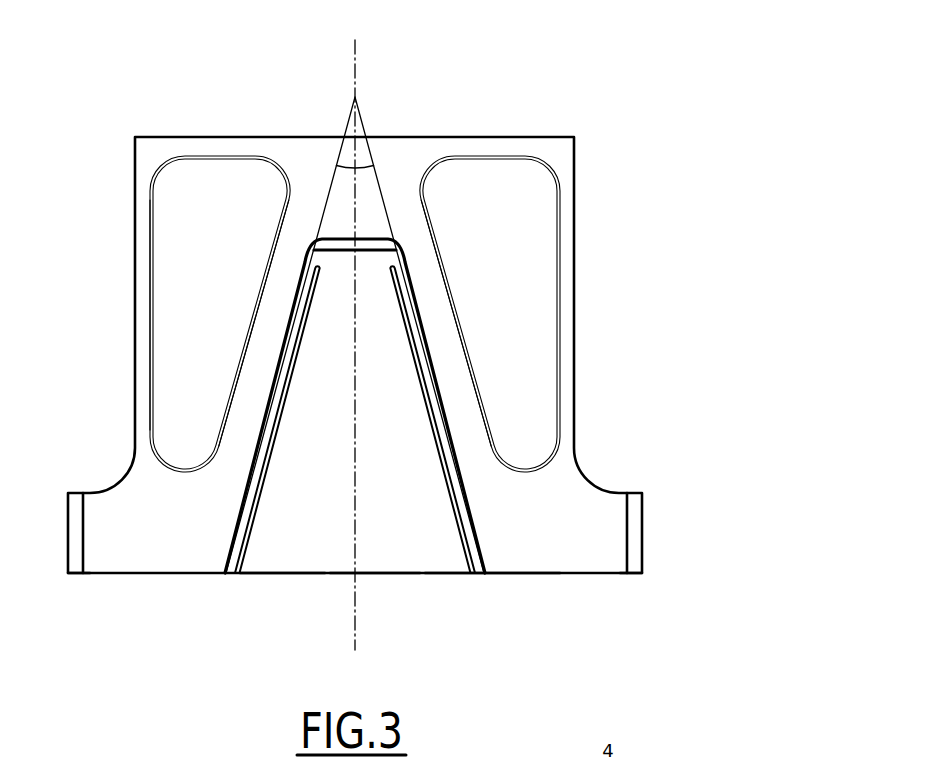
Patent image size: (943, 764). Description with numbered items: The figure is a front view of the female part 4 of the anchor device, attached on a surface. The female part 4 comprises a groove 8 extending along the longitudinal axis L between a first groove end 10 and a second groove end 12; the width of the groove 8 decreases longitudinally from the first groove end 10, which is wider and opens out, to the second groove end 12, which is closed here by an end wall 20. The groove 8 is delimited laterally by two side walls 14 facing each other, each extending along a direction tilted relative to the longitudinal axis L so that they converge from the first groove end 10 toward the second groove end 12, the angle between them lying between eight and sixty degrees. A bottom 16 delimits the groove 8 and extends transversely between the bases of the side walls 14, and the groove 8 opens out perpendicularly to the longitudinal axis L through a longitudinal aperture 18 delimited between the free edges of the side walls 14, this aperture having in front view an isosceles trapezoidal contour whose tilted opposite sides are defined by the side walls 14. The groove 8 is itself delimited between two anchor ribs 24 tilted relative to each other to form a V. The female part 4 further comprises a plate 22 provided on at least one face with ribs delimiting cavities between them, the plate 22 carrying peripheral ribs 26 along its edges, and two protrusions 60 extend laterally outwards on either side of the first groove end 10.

The female part 4 is at (614, 110).
The groove 8 is at (278, 565).
The first groove end 10 is at (440, 576).
The second groove end 12 is at (332, 271).
The side walls 14 is at (292, 357).
The bottom 16 is at (382, 563).
The longitudinal aperture 18 is at (362, 478).
The end wall 20 is at (362, 258).
The plate 22 is at (182, 197).
The anchor ribs 24 is at (277, 315).
The peripheral ribs 26 is at (210, 148).
The protrusions 60 is at (150, 547).
The longitudinal axis L is at (357, 49).